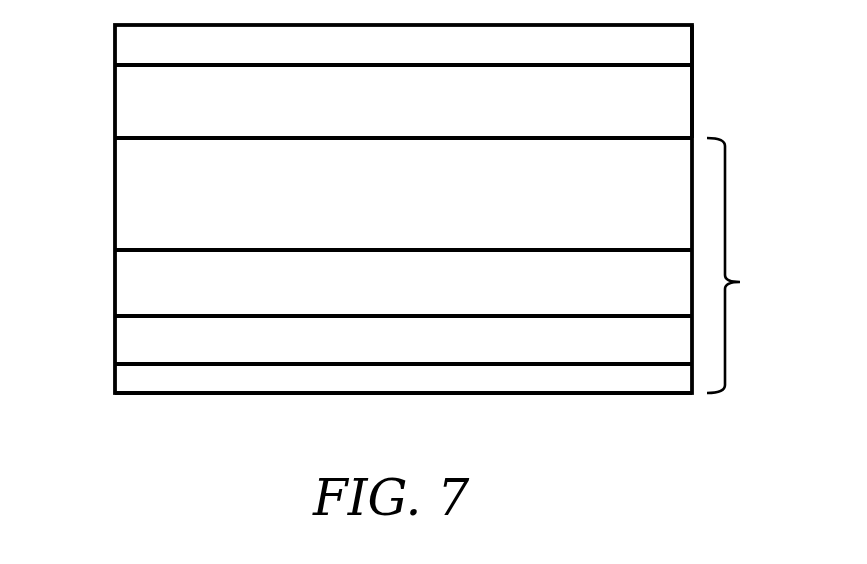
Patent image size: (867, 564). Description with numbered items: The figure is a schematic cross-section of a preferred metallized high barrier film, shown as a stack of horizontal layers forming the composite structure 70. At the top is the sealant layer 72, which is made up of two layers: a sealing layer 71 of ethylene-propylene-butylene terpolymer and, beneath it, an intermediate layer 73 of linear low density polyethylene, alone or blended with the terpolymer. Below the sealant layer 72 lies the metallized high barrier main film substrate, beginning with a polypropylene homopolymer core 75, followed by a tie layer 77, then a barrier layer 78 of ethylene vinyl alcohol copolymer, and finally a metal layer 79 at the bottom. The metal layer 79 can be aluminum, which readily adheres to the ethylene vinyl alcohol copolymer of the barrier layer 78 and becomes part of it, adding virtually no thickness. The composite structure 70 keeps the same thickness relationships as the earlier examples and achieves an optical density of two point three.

The composite structure 70 is at (100, 25).
The sealing layer 71 is at (403, 51).
The sealant layer 72 is at (707, 25).
The intermediate layer 73 is at (621, 127).
The polypropylene homopolymer core 75 is at (621, 223).
The tie layer 77 is at (621, 295).
The barrier layer 78 is at (621, 350).
The metal layer 79 is at (547, 377).